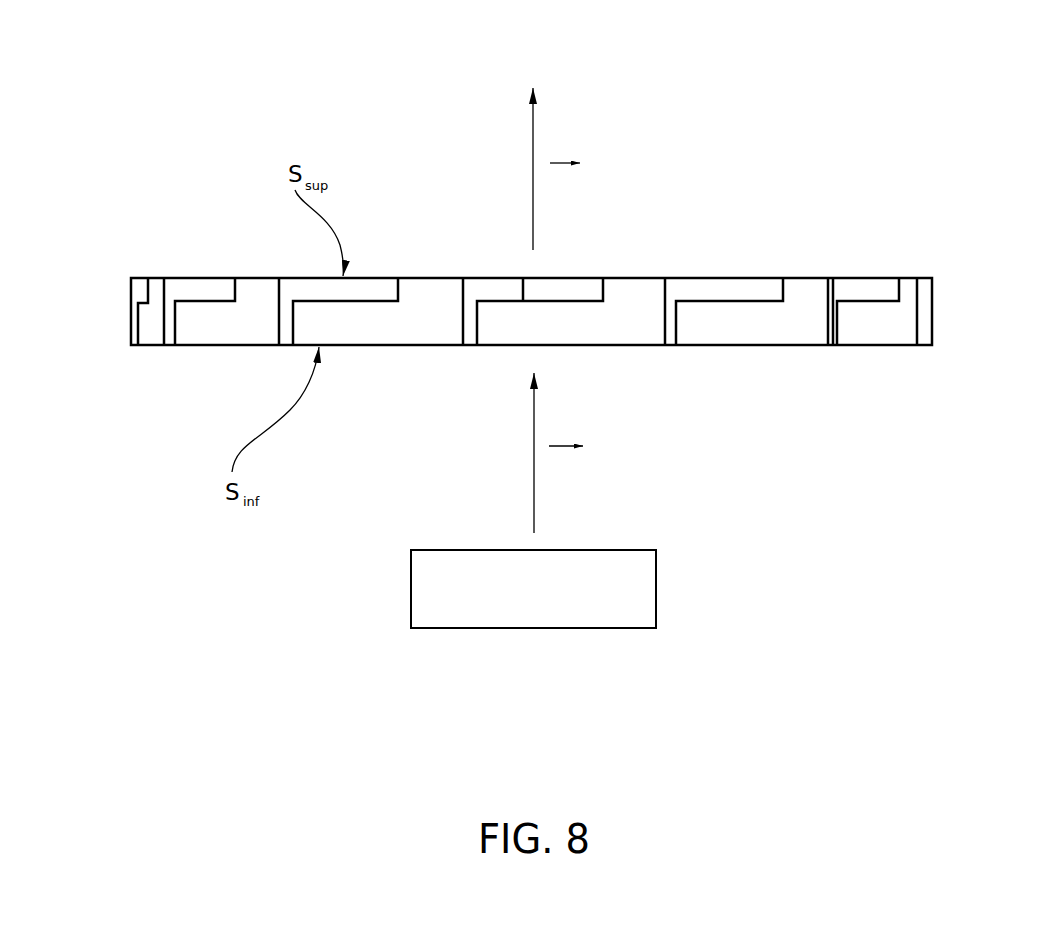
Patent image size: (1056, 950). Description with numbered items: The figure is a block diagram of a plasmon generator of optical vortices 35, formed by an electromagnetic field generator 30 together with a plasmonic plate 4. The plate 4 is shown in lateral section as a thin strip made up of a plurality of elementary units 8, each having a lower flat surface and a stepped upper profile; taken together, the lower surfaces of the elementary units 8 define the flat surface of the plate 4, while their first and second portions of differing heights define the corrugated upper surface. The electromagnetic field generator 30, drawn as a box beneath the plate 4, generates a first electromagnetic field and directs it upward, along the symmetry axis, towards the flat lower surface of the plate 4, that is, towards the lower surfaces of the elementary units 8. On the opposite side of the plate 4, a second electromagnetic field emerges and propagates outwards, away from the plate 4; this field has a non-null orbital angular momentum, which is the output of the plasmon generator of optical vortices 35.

The plate 4 is at (187, 250).
The elementary units 8 is at (232, 326).
The electromagnetic field generator 30 is at (437, 615).
The plasmon generator of optical vortices 35 is at (963, 115).